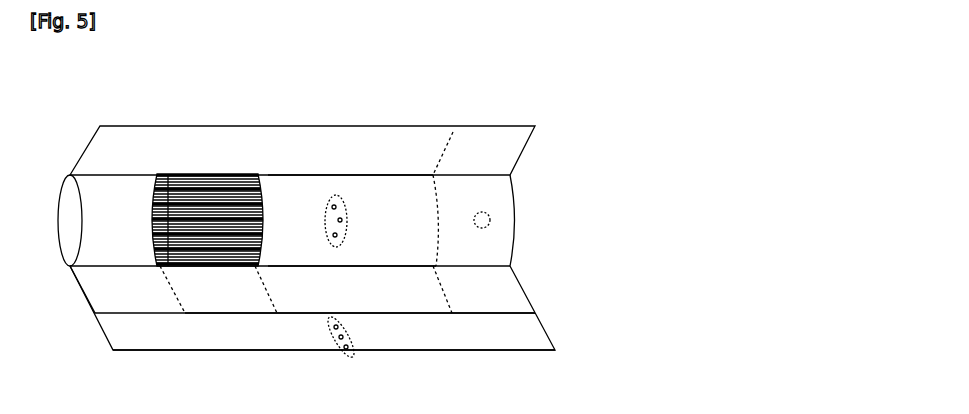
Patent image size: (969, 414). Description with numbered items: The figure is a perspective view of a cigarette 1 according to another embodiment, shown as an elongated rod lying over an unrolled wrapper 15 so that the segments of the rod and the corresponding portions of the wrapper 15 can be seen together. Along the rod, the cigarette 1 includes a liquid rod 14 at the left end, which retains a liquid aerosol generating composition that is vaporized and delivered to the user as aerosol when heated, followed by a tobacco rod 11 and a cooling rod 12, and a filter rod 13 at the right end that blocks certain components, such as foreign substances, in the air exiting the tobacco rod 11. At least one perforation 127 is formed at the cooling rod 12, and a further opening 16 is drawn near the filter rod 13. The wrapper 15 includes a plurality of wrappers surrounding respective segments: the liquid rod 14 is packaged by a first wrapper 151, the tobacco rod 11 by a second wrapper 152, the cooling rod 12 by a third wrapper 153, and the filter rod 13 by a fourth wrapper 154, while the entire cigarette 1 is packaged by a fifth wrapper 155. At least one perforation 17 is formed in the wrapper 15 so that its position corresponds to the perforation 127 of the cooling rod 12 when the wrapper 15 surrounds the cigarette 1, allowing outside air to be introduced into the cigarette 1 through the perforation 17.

The cigarette 1 is at (573, 97).
The tobacco rod 11 is at (190, 176).
The cooling rod 12 is at (377, 185).
The perforation 127 is at (335, 194).
The filter rod 13 is at (475, 185).
The liquid rod 14 is at (102, 183).
The wrapper 15 is at (514, 266).
The first wrapper 151 is at (95, 293).
The second wrapper 152 is at (193, 298).
The third wrapper 153 is at (390, 300).
The fourth wrapper 154 is at (472, 300).
The fifth wrapper 155 is at (275, 337).
The hole 16 is at (490, 220).
The perforation 17 is at (333, 342).